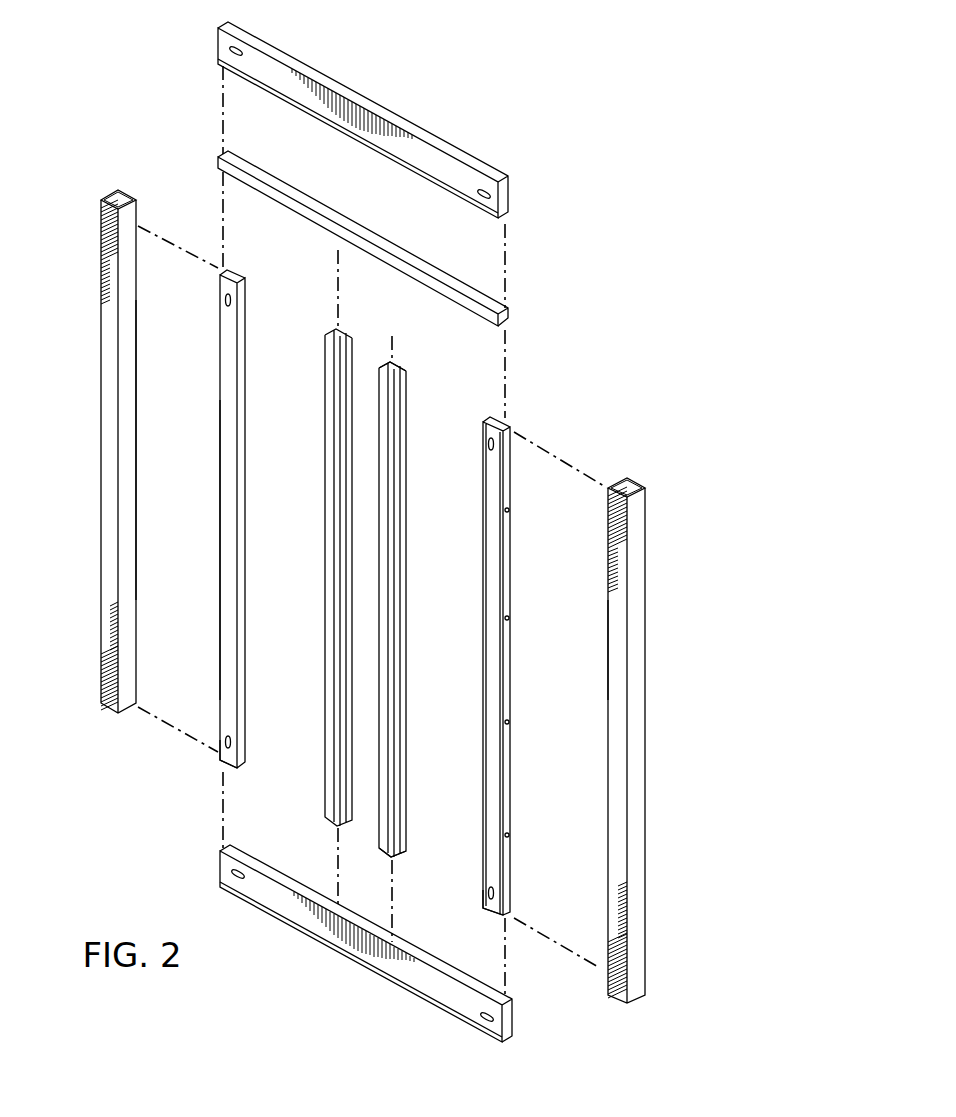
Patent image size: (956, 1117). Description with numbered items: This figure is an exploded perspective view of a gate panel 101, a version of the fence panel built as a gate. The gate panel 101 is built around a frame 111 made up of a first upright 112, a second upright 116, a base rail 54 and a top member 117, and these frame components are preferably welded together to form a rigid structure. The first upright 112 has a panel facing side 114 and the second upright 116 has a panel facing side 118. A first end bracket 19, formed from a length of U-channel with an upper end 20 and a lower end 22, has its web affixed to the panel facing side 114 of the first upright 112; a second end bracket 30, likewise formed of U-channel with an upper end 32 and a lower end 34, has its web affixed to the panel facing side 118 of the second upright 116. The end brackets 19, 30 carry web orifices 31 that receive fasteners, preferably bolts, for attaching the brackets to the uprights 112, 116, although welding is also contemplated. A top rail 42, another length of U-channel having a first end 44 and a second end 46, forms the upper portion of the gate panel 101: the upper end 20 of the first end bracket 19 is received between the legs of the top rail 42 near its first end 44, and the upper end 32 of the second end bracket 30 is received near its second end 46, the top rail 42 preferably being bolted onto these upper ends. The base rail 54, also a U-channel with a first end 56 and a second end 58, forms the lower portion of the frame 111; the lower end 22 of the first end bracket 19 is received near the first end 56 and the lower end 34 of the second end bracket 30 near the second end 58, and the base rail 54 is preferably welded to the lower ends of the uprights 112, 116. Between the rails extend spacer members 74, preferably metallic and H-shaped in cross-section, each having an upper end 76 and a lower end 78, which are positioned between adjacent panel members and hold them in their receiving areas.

The gate panel 101 is at (527, 68).
The frame 111 is at (262, 976).
The first upright 112 is at (98, 451).
The panel facing side 114 is at (132, 388).
The second upright 116 is at (649, 777).
The panel facing side 118 is at (606, 612).
The top rail 42 is at (363, 117).
The first end 44 is at (218, 46).
The second end 46 is at (510, 203).
The top member 117 is at (376, 233).
The base rail 54 is at (366, 948).
The first end 56 is at (218, 871).
The second end 58 is at (512, 1023).
The upper end 20 is at (236, 271).
The first end bracket 19 is at (218, 538).
The lower end 22 is at (227, 771).
The second end bracket 30 is at (514, 668).
The web orifices 31 is at (509, 511).
The upper end 32 is at (500, 421).
The lower end 34 is at (488, 914).
The spacer members 74 is at (411, 574).
The upper end 76 is at (401, 366).
The lower end 78 is at (387, 857).